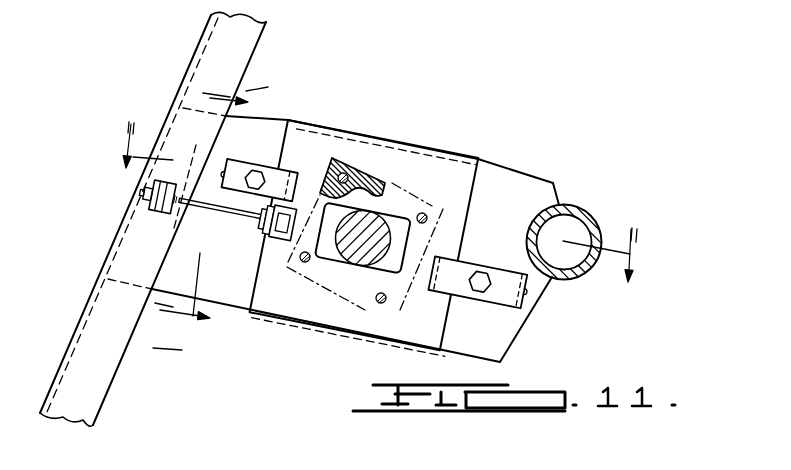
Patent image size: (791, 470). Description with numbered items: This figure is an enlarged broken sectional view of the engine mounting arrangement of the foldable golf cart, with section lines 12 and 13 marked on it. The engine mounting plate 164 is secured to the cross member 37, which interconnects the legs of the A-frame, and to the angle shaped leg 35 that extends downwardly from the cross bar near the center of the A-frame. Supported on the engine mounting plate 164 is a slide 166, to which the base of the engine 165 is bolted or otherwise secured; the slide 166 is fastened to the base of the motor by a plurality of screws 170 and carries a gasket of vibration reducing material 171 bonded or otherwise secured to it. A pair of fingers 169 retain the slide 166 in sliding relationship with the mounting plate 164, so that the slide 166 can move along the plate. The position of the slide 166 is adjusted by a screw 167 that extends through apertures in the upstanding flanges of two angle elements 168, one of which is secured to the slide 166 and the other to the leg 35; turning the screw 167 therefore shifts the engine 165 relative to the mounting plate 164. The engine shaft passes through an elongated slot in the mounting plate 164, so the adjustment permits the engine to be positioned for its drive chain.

The angle shaped leg 35 is at (250, 42).
The engine mounting plate 164 is at (508, 170).
The engine 165 is at (380, 172).
The slide 166 is at (320, 120).
The screw 167 is at (242, 217).
The angle element 168 is at (176, 186).
The finger 169 is at (293, 167).
The screw 170 is at (357, 170).
The gasket of vibration reducing material 171 is at (447, 207).
The cross member 37 is at (588, 212).
The section line 12- 12 is at (380, 202).
The section line 13- 13 is at (227, 208).